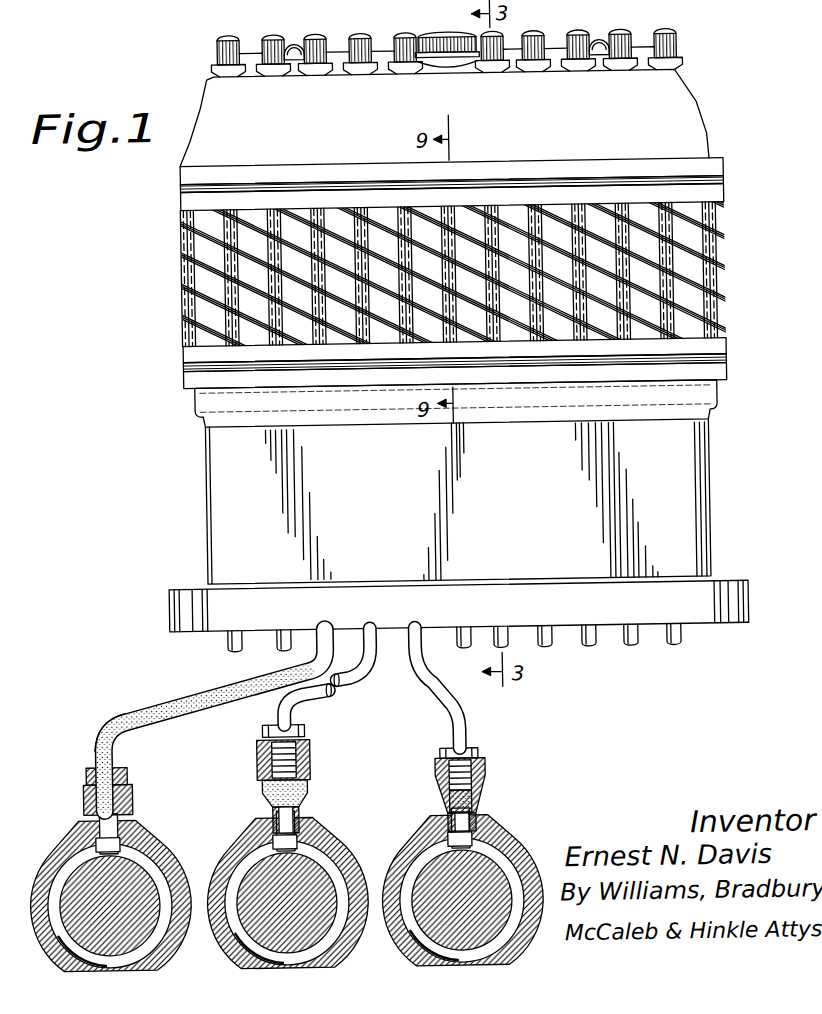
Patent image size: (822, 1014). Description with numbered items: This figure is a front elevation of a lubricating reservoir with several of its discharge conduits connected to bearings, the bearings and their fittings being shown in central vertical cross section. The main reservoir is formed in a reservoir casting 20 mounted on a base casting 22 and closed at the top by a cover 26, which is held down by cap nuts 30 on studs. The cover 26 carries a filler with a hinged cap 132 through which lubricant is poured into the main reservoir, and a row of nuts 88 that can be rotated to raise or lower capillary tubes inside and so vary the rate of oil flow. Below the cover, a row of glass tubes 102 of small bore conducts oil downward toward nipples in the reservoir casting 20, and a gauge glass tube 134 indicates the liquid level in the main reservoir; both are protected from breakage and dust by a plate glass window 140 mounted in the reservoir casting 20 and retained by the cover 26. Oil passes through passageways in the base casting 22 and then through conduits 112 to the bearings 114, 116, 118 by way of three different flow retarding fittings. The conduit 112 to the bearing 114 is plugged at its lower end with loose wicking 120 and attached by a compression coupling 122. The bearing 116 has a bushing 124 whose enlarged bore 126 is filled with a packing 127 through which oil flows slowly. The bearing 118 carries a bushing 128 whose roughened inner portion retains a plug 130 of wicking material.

The reservoir casting 20 is at (728, 352).
The base casting 22 is at (716, 454).
The cover 26 is at (706, 112).
The cap nuts 30 is at (305, 35).
The nuts 88 is at (384, 33).
The hinged cap 132 is at (433, 33).
The glass tubes 102 is at (322, 240).
The plate glass window 140 is at (245, 311).
The glass tube 134 is at (483, 382).
The conduits 112 is at (145, 700).
The loose wicking 120 is at (126, 728).
The compression coupling 122 is at (126, 792).
The bearing 114 is at (168, 832).
The packing 127 is at (252, 794).
The enlarged bore 126 is at (304, 775).
The bushing 124 is at (301, 807).
The bearing 116 is at (346, 834).
The bushing 128 is at (481, 781).
The plug 130 is at (466, 803).
The bearing 118 is at (503, 838).